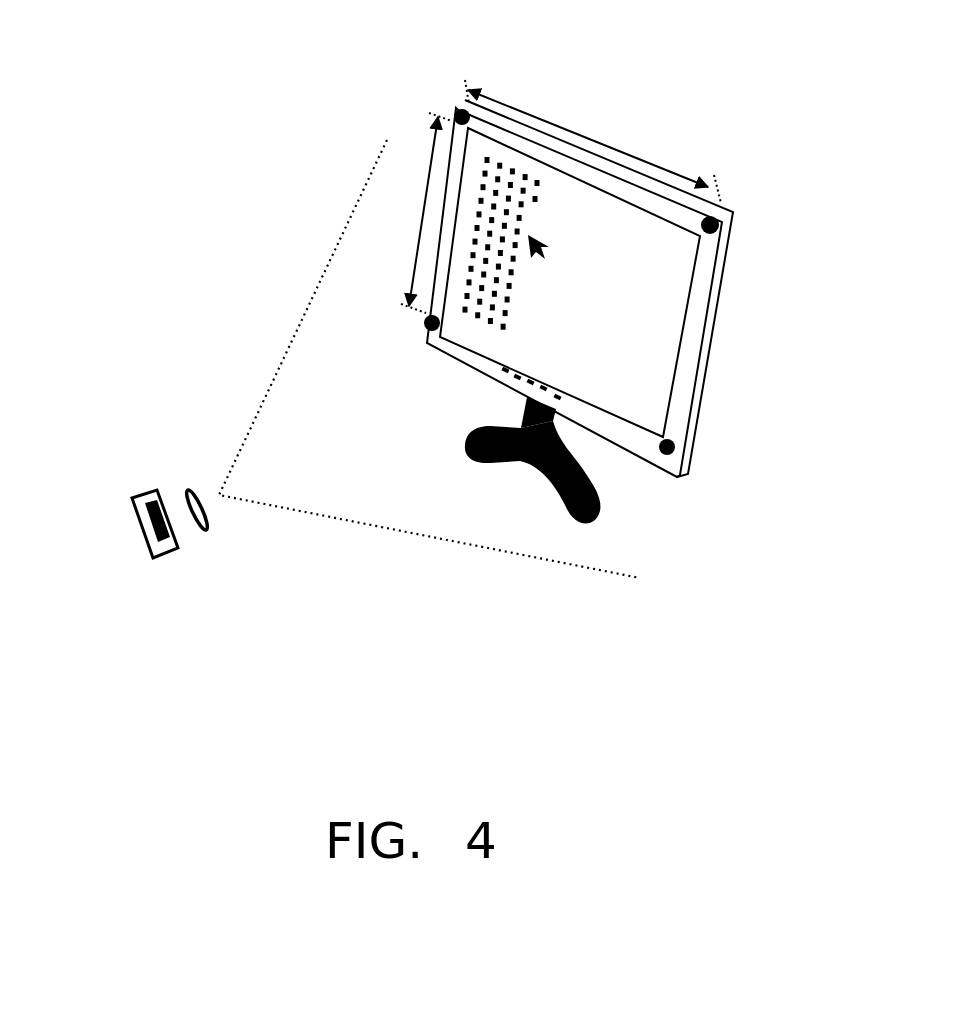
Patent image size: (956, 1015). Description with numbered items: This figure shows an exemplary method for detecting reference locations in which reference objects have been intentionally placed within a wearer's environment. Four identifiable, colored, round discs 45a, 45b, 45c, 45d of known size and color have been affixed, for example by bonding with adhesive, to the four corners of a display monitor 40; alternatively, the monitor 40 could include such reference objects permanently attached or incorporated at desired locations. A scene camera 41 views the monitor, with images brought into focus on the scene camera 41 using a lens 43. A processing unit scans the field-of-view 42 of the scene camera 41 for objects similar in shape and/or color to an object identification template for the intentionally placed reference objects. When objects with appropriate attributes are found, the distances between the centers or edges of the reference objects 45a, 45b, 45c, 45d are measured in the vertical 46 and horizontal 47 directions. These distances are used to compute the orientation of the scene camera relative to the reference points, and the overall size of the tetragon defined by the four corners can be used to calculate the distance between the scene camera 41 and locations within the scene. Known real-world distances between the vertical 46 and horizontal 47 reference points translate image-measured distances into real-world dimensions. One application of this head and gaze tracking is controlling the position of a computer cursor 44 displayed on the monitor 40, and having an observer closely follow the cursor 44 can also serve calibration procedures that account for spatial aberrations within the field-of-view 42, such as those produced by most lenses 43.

The display monitor 40 is at (704, 330).
The scene camera 41 is at (154, 568).
The field-of-view 42 is at (329, 238).
The lens 43 is at (186, 476).
The computer cursor 44 is at (555, 250).
The disc 45a is at (457, 110).
The disc 45b is at (717, 222).
The disc 45c is at (668, 458).
The disc 45d is at (427, 337).
The vertical direction 46 is at (414, 226).
The horizontal direction 47 is at (582, 132).